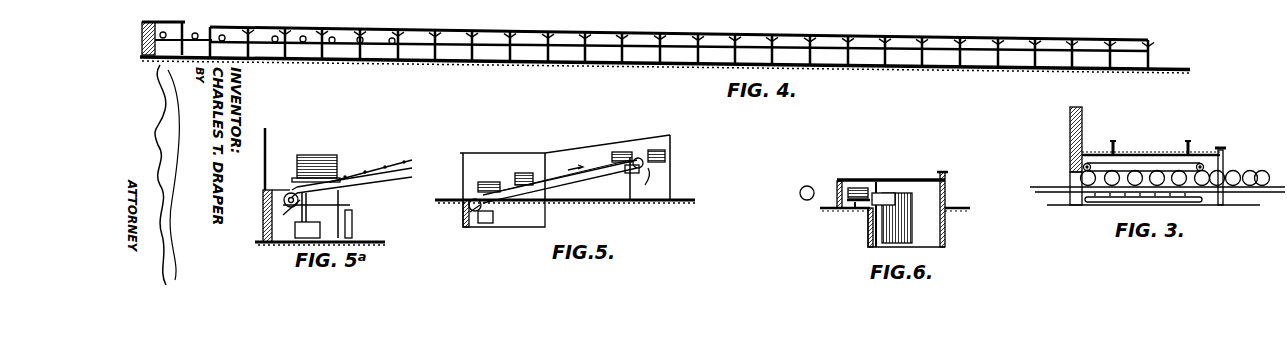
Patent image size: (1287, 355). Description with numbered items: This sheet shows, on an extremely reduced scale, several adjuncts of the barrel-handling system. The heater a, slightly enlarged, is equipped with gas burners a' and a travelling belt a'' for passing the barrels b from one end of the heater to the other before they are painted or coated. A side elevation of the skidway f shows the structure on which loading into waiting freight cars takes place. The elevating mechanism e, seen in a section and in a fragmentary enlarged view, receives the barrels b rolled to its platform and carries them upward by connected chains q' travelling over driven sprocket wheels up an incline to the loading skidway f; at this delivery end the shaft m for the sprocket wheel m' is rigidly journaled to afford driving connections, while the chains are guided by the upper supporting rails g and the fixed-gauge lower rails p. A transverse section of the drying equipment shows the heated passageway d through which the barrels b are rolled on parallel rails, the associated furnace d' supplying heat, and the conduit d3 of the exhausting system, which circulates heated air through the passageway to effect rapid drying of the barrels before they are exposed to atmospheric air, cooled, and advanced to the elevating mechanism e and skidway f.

In FIG. 4, the barrel b is at (306, 36).
In FIG. 5A, the barrel b is at (318, 155).
In FIG. 5, the barrel b is at (520, 173).
In FIG. 6, the barrel b is at (858, 188).
In FIG. 3, the barrel b is at (1237, 173).
In FIG. 4, the skidway f is at (445, 39).
In FIG. 5, the skidway f is at (655, 165).
In FIG. 5A, the elevating mechanism e is at (376, 171).
In FIG. 5, the elevating mechanism e is at (560, 175).
In FIG. 5A, the connected chains q' is at (354, 172).
In FIG. 5, the connected chains q' is at (540, 193).
In FIG. 5A, the shaft m is at (350, 215).
In FIG. 5A, the sprocket wheel m' is at (323, 228).
In FIG. 6, the heated passageway d is at (889, 170).
In FIG. 6, the furnace d' is at (902, 195).
In FIG. 6, the conduit d3 is at (808, 186).
In FIG. 6, the supporting rails g is at (848, 200).
In FIG. 6, the lower rails p is at (856, 207).
In FIG. 3, the heater a is at (1157, 208).
In FIG. 3, the gas burners a' is at (1143, 208).